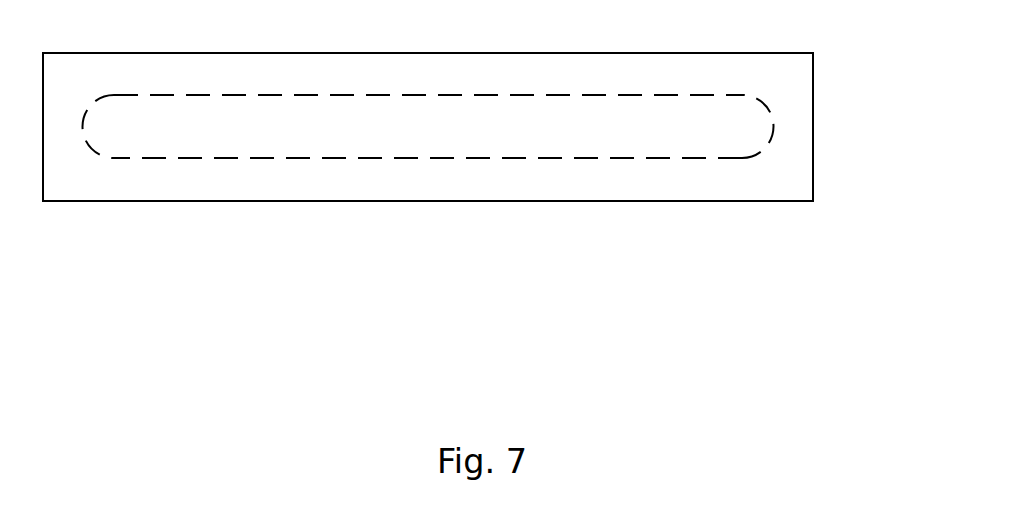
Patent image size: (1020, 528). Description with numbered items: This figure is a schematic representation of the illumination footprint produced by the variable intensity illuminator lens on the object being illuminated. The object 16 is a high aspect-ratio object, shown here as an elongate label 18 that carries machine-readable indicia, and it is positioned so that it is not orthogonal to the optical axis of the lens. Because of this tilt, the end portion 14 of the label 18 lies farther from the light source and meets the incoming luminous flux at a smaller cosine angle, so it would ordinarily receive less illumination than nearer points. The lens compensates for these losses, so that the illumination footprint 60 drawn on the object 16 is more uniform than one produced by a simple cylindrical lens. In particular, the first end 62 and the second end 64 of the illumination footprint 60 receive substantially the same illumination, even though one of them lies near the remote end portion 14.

The end portion 14 is at (813, 143).
The high aspect-ratio object 16 is at (203, 53).
The elongate label 18 is at (283, 203).
The illumination footprint 60 is at (437, 94).
The first end of illumination footprint 62 is at (132, 160).
The second end of illumination footprint 64 is at (729, 158).